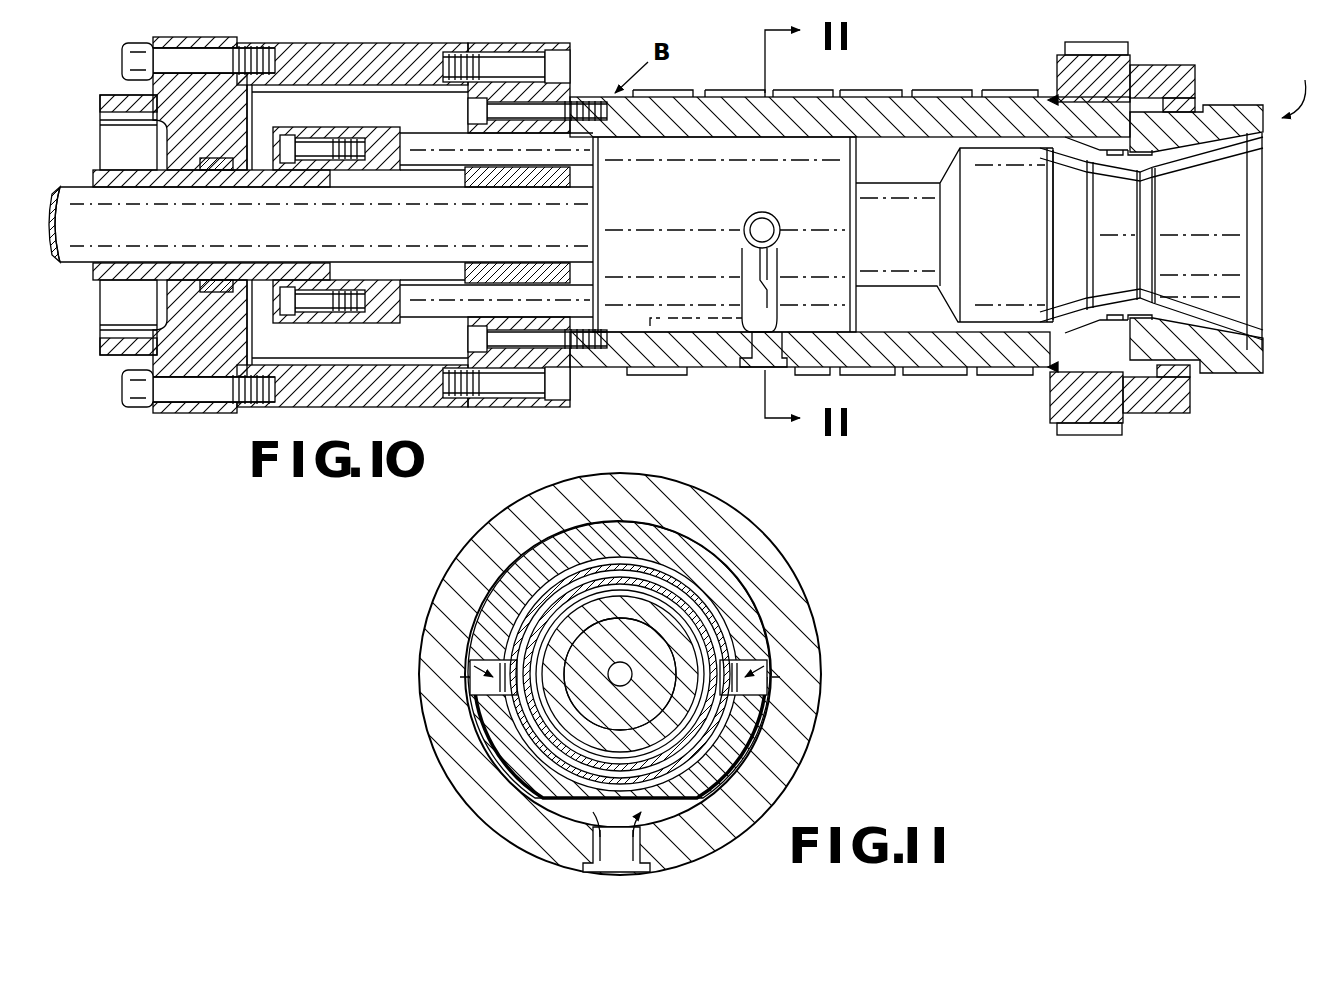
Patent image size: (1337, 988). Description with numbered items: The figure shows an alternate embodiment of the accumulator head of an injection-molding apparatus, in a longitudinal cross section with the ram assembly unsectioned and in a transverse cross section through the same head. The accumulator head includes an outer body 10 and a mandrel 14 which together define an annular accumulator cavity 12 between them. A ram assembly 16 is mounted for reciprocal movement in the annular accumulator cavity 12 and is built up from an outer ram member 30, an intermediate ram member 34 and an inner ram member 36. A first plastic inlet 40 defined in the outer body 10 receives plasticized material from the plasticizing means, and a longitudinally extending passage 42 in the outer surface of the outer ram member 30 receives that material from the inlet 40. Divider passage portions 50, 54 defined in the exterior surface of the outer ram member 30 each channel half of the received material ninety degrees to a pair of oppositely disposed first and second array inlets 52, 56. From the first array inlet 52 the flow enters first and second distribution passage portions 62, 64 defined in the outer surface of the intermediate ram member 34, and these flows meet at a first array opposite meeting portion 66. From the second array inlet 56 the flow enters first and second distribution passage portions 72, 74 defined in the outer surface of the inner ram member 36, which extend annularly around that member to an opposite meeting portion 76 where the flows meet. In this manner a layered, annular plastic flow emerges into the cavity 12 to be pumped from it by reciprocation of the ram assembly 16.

In FIG. 10, the outer body 10 is at (942, 112).
In FIG. 11, the outer body 10 is at (763, 563).
In FIG. 10, the annular accumulator cavity 12 is at (912, 169).
In FIG. 10, the mandrel 14 is at (912, 226).
In FIG. 11, the mandrel 14 is at (685, 622).
In FIG. 10, the ram assembly 16 is at (860, 138).
In FIG. 10, the outer ram member 30 is at (688, 195).
In FIG. 11, the outer ram member 30 is at (513, 572).
In FIG. 11, the intermediate ram member 34 is at (535, 600).
In FIG. 11, the inner ram member 36 is at (545, 640).
In FIG. 10, the first plastic inlet 40 is at (765, 345).
In FIG. 11, the first plastic inlet 40 is at (628, 856).
In FIG. 10, the longitudinally extending passage 42 is at (675, 340).
In FIG. 11, the longitudinally extending passage 42 is at (585, 810).
In FIG. 10, the divider passage portion 50 is at (768, 266).
In FIG. 11, the divider passage portion 50 is at (760, 717).
In FIG. 10, the first array inlet 52 is at (770, 226).
In FIG. 11, the first array inlet 52 is at (780, 666).
In FIG. 11, the divider passage portion 54 is at (478, 728).
In FIG. 11, the second array inlet 56 is at (460, 662).
In FIG. 11, the first distribution passage portion 62 is at (703, 772).
In FIG. 11, the second distribution passage portion 64 is at (655, 580).
In FIG. 11, the first array opposite meeting portion 66 is at (478, 687).
In FIG. 11, the first distribution passage portion 72 is at (518, 802).
In FIG. 11, the second distribution passage portion 74 is at (610, 566).
In FIG. 11, the opposite meeting portion 76 is at (673, 632).